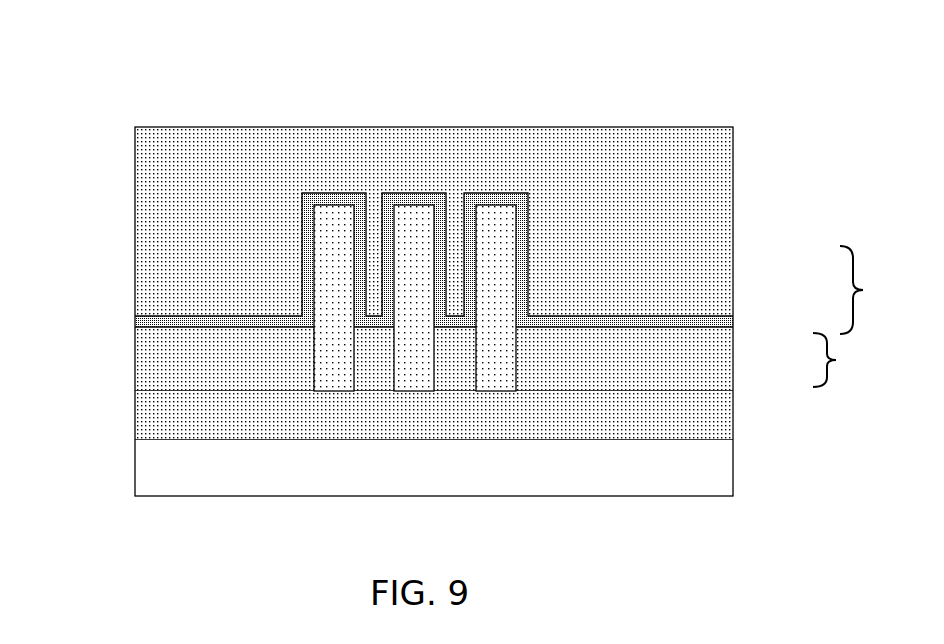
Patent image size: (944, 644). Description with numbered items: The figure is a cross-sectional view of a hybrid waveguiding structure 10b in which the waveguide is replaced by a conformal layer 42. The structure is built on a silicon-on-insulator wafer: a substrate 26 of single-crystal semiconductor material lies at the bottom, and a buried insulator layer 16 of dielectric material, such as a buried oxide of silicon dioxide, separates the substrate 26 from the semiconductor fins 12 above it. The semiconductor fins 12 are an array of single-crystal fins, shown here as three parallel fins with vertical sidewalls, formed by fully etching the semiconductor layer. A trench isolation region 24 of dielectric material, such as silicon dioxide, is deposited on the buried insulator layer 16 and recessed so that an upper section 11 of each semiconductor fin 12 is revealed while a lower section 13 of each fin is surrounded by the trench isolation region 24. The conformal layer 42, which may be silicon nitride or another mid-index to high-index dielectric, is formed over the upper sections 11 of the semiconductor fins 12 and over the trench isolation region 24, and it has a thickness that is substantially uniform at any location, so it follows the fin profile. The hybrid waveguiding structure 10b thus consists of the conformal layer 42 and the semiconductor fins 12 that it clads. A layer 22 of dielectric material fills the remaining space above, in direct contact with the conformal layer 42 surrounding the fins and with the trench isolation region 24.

The hybrid waveguiding structure 10b is at (153, 98).
The upper section 11 is at (868, 290).
The semiconductor fins 12 is at (327, 271).
The lower section 13 is at (842, 360).
The buried insulator layer 16 is at (712, 421).
The layer 22 is at (702, 182).
The trench isolation region 24 is at (153, 370).
The substrate 26 is at (153, 475).
The conformal layer 42 is at (312, 226).